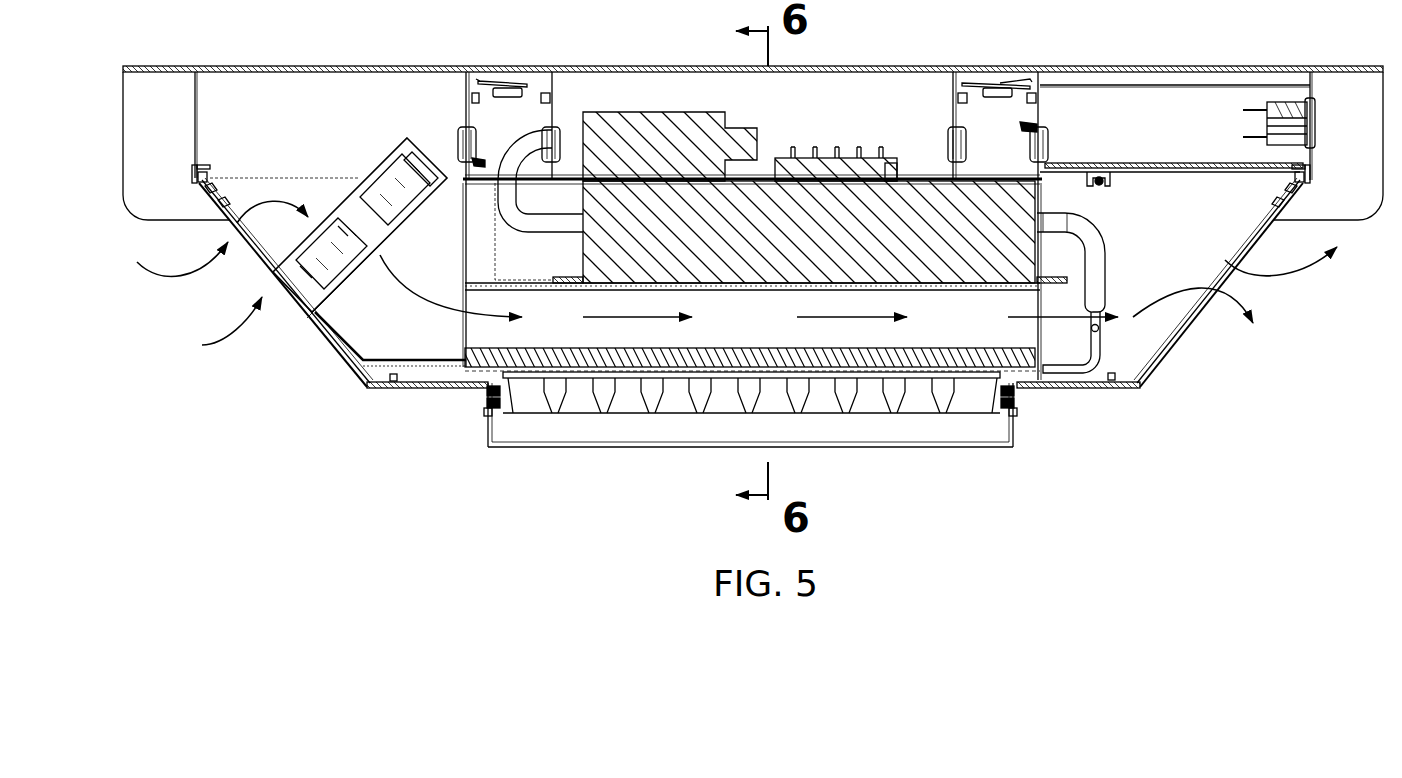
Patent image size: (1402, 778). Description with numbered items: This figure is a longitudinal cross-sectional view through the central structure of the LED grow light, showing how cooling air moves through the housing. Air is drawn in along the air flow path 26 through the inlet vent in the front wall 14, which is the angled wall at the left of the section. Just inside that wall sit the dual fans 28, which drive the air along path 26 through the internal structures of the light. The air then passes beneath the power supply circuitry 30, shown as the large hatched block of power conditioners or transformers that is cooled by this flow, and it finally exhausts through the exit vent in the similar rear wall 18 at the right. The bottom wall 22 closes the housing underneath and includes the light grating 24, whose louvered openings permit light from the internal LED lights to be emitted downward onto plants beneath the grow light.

The front wall 14 is at (347, 368).
The rear wall 18 is at (1162, 373).
The bottom wall 22 is at (1088, 392).
The light grating 24 is at (487, 442).
The air flow path 26 is at (148, 272).
The dual fans 28 is at (347, 218).
The power supply circuitry 30 is at (840, 262).